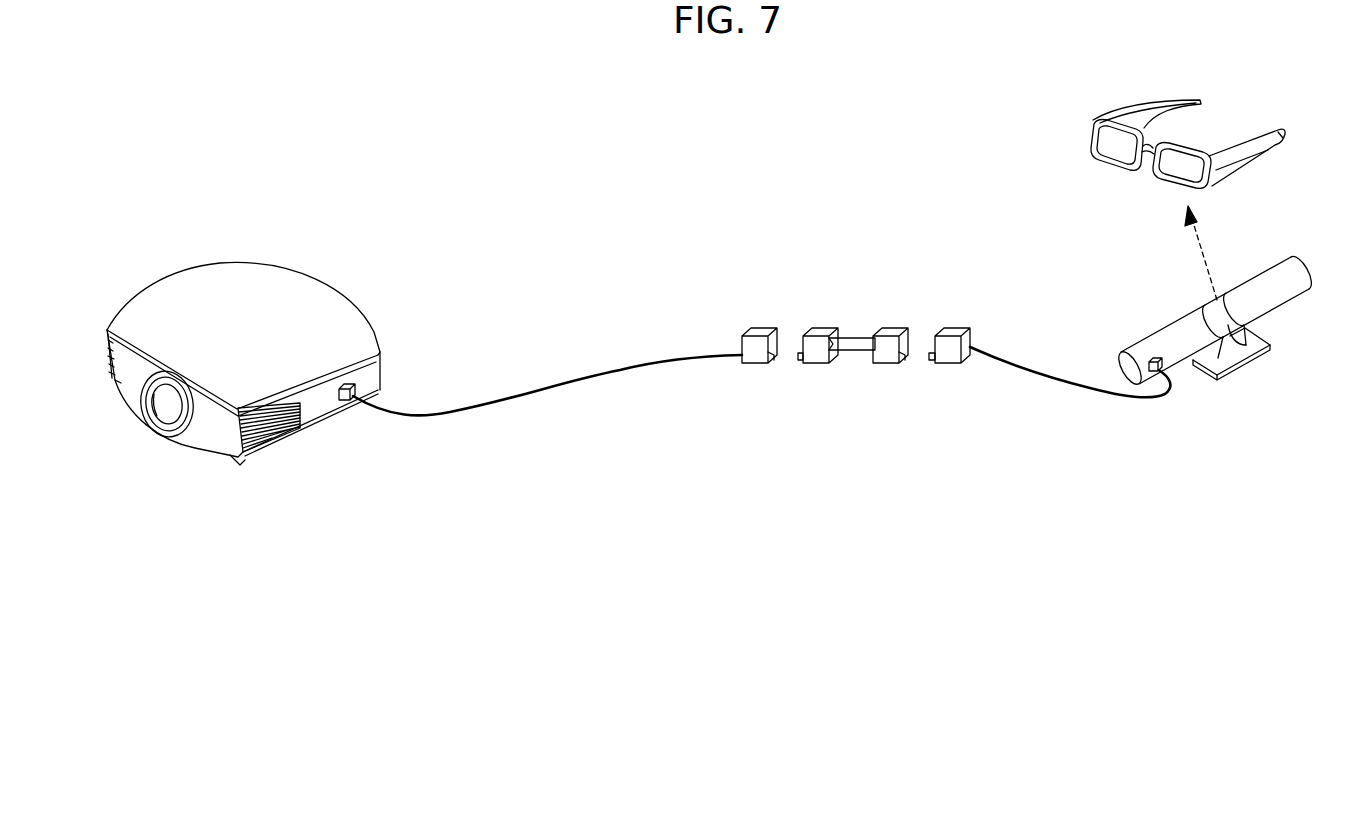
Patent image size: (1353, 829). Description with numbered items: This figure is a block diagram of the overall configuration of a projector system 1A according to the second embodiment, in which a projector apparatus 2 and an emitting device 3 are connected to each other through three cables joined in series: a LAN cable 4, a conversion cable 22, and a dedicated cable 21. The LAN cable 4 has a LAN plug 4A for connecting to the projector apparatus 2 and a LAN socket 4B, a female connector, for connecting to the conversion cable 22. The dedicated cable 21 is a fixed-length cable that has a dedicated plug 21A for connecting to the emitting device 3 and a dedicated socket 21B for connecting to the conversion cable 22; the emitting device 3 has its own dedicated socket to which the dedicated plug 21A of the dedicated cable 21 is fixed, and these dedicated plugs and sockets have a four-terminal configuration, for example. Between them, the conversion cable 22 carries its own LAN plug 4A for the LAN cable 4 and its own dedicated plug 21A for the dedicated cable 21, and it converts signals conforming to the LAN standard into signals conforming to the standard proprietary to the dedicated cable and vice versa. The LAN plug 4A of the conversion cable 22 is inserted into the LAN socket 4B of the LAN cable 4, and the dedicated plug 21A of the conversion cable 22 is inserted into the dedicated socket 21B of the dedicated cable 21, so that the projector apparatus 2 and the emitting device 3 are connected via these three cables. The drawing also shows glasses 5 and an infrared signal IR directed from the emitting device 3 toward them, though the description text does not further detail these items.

The projector system 1A is at (415, 160).
The projector apparatus 2 is at (279, 284).
The emitting device 3 is at (1270, 278).
The LAN cable 4 is at (563, 383).
The LAN plug 4A is at (342, 403).
The LAN socket 4B is at (760, 329).
The 3D glasses 5 is at (1142, 112).
The dedicated cable 21 is at (1058, 377).
The dedicated plug 21A is at (893, 329).
The dedicated socket 21B is at (955, 329).
The conversion cable 22 is at (858, 335).
The infrared signal IR is at (1200, 260).